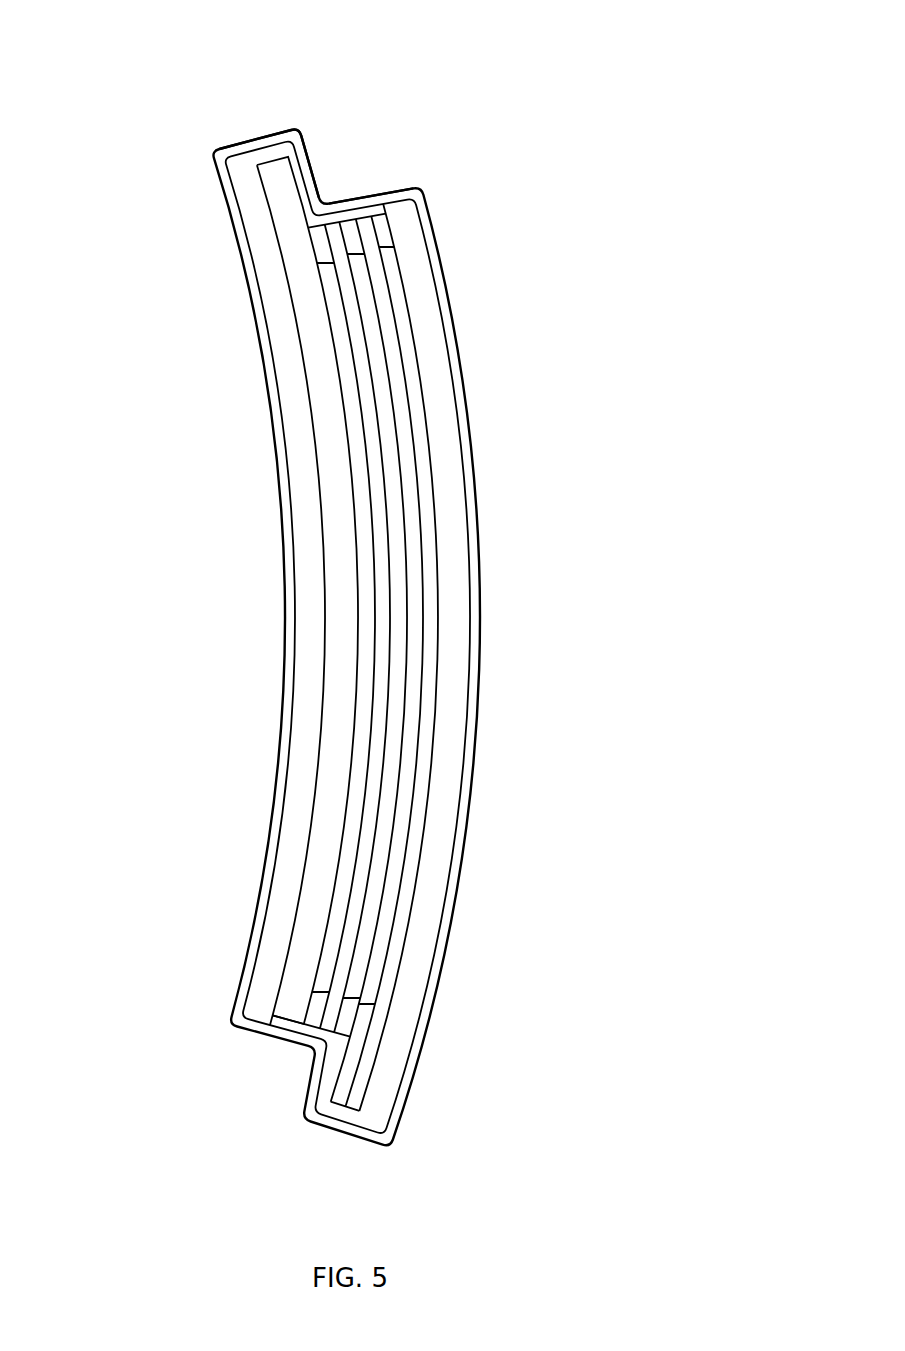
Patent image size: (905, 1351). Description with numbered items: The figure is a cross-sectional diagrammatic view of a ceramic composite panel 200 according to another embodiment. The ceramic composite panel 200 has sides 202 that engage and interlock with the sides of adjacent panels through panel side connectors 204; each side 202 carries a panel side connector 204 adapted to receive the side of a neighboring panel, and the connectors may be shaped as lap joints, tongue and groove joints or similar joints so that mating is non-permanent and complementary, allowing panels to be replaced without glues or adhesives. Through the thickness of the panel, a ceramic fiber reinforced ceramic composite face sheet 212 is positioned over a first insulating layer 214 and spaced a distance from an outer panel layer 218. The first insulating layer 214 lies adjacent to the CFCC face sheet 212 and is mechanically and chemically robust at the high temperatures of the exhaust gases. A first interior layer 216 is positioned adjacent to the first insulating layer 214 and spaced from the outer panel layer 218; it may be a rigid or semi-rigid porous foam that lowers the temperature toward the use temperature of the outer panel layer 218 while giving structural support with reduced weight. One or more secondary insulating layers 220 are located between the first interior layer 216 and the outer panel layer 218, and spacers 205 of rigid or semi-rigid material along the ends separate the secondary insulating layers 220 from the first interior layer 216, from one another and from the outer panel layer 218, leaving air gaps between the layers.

The ceramic composite panel 200 is at (613, 80).
The sides 202 is at (242, 140).
The panel side connector 204 is at (370, 187).
The spacers 205 is at (317, 240).
The CFCC face sheet 212 is at (250, 295).
The first insulating layer 214 is at (297, 415).
The first interior layer 216 is at (337, 575).
The outer panel layer 218 is at (480, 537).
The secondary insulating layer 220 is at (390, 322).